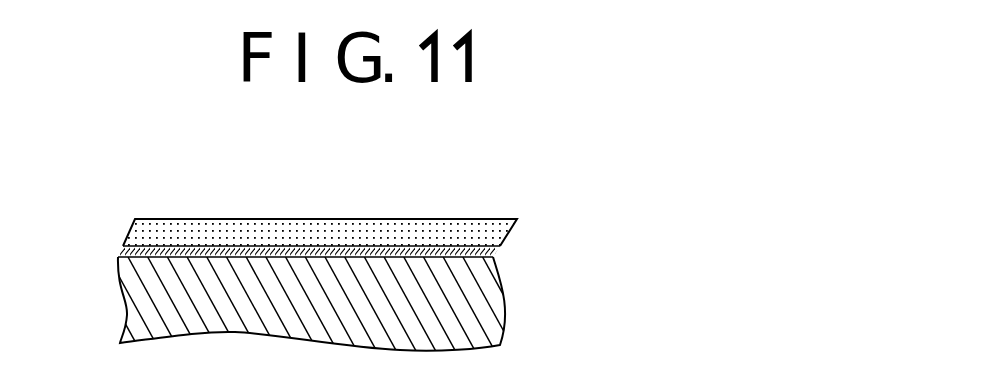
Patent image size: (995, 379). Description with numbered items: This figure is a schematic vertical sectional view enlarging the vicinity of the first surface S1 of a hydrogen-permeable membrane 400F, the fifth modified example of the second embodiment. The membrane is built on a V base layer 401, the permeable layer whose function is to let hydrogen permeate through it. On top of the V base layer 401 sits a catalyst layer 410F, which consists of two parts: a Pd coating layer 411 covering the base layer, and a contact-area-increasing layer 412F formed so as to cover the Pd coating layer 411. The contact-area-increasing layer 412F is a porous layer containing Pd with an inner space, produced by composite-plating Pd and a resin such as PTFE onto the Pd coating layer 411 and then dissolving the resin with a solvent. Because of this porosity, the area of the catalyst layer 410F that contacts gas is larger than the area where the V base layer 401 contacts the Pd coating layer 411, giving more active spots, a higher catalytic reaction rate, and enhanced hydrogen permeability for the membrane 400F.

The hydrogen-permeable membrane 400F is at (421, 231).
The catalyst layer 410F is at (445, 230).
The contact-area-increasing layer 412F is at (528, 220).
The Pd coating layer 411 is at (504, 250).
The V base layer 401 is at (503, 291).
The first surface S1 is at (140, 205).